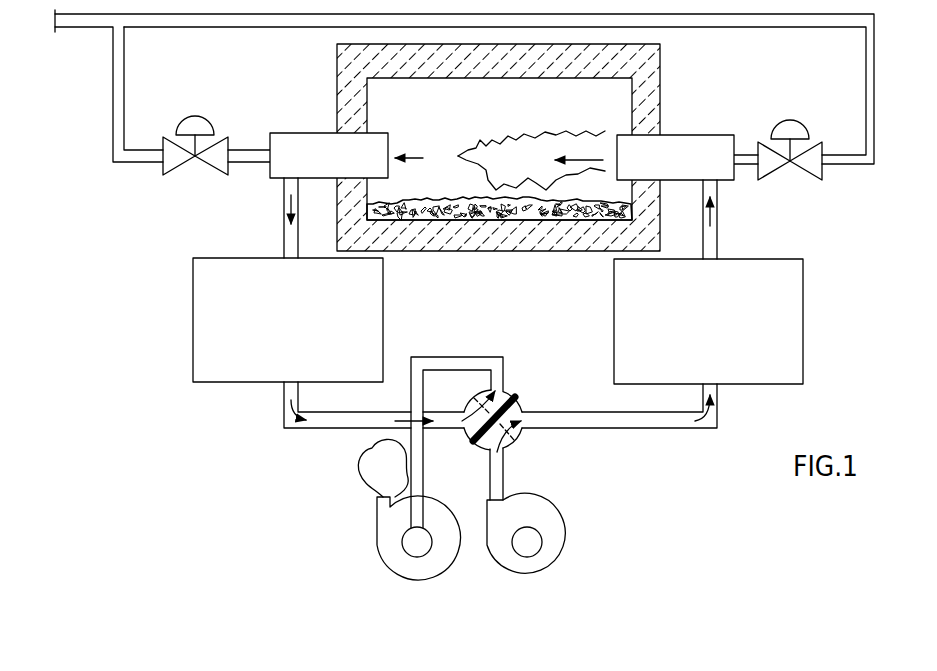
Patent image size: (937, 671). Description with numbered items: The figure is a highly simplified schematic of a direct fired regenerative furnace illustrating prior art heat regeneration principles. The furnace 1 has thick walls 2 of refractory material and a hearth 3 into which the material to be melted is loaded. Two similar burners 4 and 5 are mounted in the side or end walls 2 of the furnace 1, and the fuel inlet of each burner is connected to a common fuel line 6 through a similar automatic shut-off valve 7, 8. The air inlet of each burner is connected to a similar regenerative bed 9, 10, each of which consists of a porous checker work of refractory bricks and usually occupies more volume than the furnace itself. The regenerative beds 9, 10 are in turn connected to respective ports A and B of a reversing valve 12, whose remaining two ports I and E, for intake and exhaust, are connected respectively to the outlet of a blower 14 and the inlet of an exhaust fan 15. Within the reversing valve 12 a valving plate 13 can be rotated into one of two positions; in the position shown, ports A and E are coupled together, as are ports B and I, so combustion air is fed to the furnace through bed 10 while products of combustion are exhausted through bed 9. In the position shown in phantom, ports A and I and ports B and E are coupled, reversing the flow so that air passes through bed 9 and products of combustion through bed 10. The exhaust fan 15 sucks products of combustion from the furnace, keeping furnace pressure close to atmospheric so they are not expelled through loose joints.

The furnace 1 is at (526, 165).
The walls 2 is at (662, 98).
The hearth 3 is at (532, 251).
The burner 4 is at (311, 133).
The burner 5 is at (710, 143).
The fuel line 6 is at (76, 22).
The automatic shut-off valve 7 is at (205, 118).
The automatic shut-off valve 8 is at (800, 118).
The regenerative bed 9 is at (294, 340).
The regenerative bed 10 is at (718, 341).
The reversing valve 12 is at (509, 421).
The valve plate 13 is at (483, 446).
The blower 14 is at (560, 505).
The fan 15 is at (440, 508).